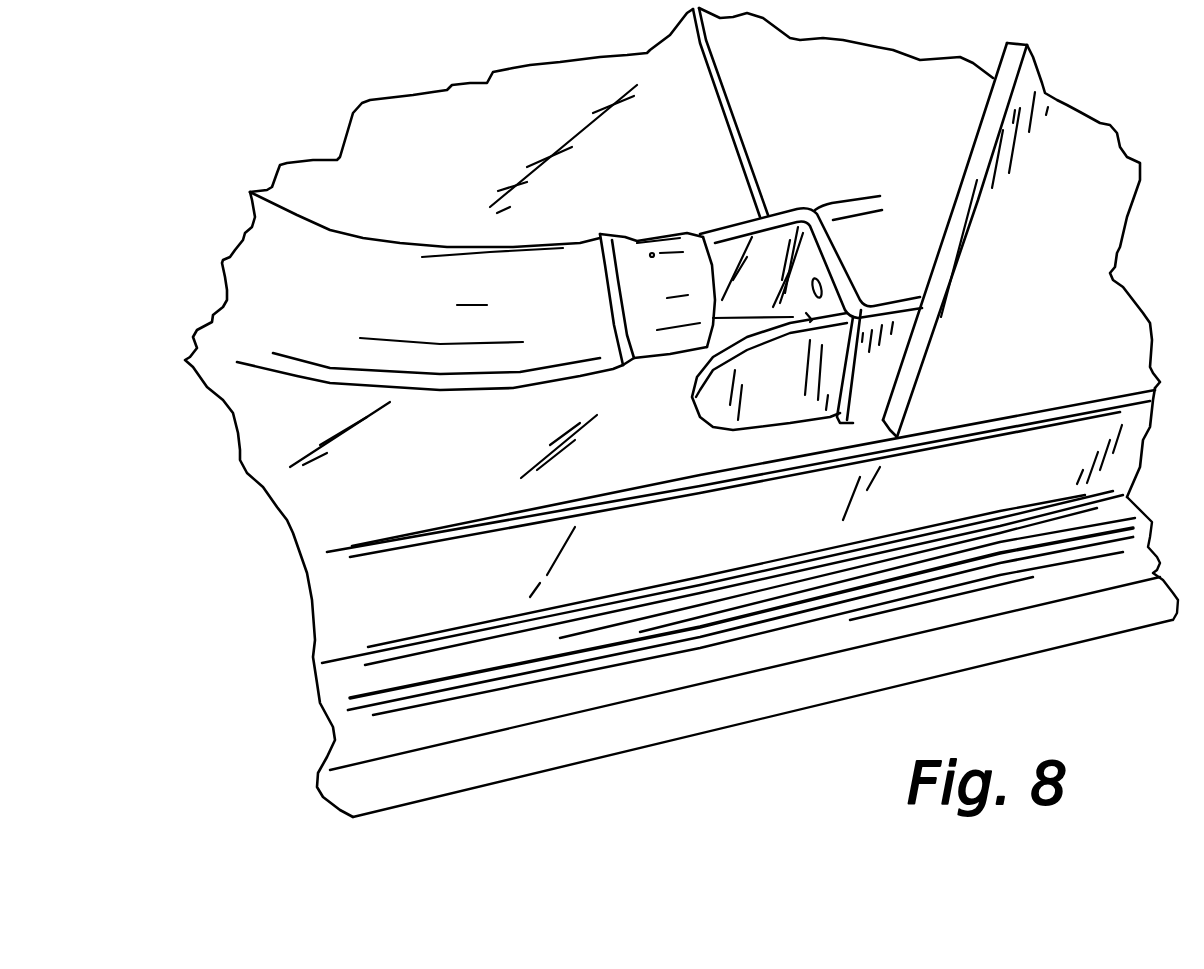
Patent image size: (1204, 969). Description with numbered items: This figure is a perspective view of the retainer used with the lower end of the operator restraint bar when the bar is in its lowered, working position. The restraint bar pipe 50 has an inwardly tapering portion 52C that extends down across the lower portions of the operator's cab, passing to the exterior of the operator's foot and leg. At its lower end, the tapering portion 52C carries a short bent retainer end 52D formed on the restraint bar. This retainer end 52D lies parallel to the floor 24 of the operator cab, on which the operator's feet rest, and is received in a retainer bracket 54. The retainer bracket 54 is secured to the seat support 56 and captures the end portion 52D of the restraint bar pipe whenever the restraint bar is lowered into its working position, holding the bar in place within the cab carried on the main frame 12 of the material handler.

The main frame 12 is at (750, 654).
The floor 24 is at (659, 412).
The restraint bar pipe 50 is at (542, 319).
The inwardly tapering portion 52C is at (335, 229).
The retainer end 52D is at (657, 335).
The retainer bracket 54 is at (793, 289).
The seat support 56 is at (1028, 240).